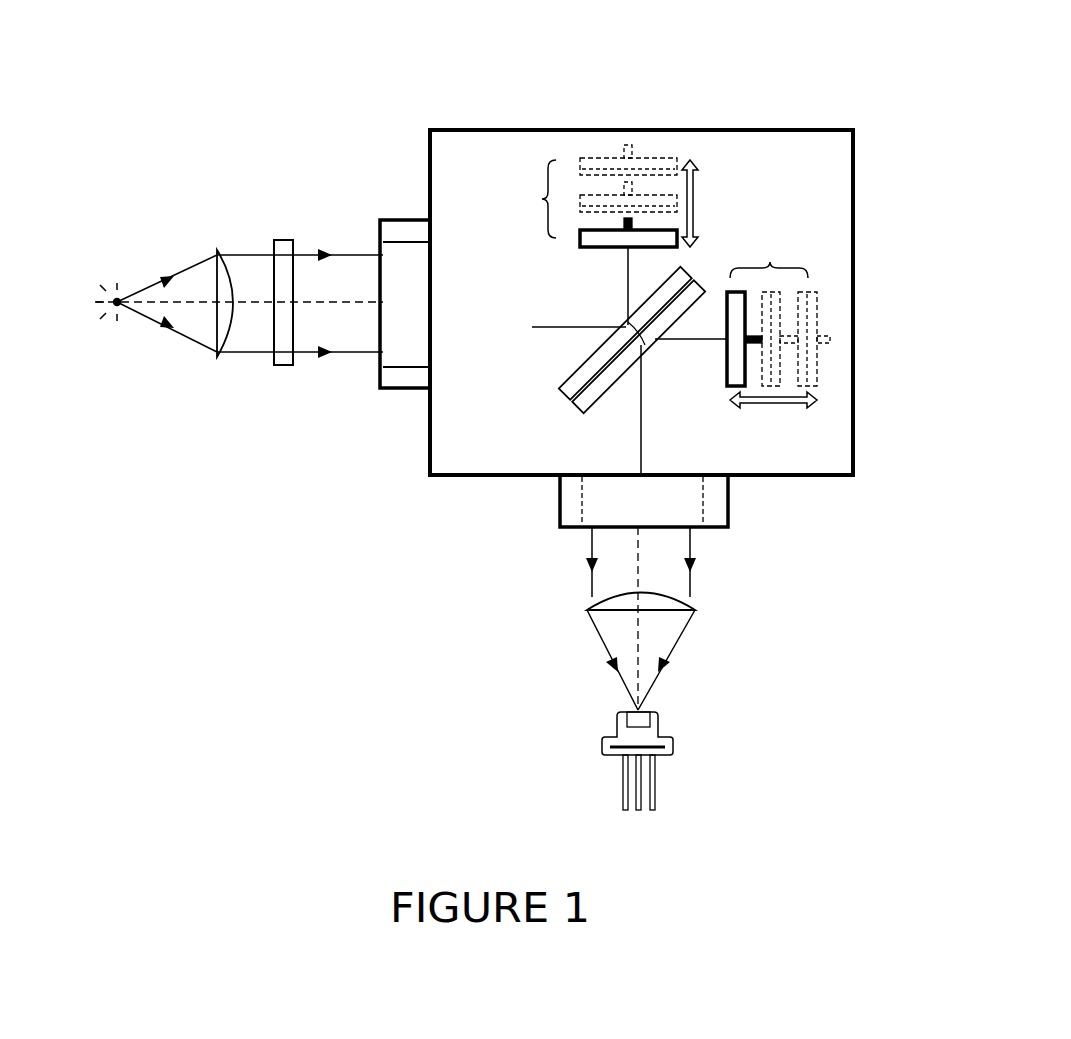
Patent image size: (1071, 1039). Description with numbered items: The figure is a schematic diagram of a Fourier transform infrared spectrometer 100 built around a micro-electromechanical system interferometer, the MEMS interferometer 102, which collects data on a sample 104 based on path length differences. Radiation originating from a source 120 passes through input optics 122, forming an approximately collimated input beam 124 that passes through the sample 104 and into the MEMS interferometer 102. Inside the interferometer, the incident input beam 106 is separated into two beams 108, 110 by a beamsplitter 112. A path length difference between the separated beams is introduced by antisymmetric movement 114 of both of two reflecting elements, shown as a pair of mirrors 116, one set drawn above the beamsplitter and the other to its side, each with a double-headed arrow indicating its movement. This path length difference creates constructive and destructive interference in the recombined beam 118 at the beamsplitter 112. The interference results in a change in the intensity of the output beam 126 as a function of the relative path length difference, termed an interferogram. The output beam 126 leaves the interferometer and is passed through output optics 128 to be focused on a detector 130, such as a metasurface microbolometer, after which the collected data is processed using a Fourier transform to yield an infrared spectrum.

The Fourier transform infrared (FTIR) spectrometer 100 is at (787, 68).
The MEMS interferometer 102 is at (860, 420).
The sample 104 is at (283, 238).
The input beam 106 is at (574, 326).
The first separated beam 108 is at (626, 292).
The second separated beam 110 is at (708, 342).
The beamsplitter 112 is at (572, 372).
The antisymmetric movement 114 is at (697, 198).
The pair of mirrors 116 is at (658, 265).
The recombined beam 118 is at (641, 410).
The source 120 is at (114, 318).
The input optics 122 is at (218, 250).
The approximately collimated input beam 124 is at (254, 356).
The output beam 126 is at (590, 546).
The output optics 128 is at (690, 600).
The detector 130 is at (660, 724).